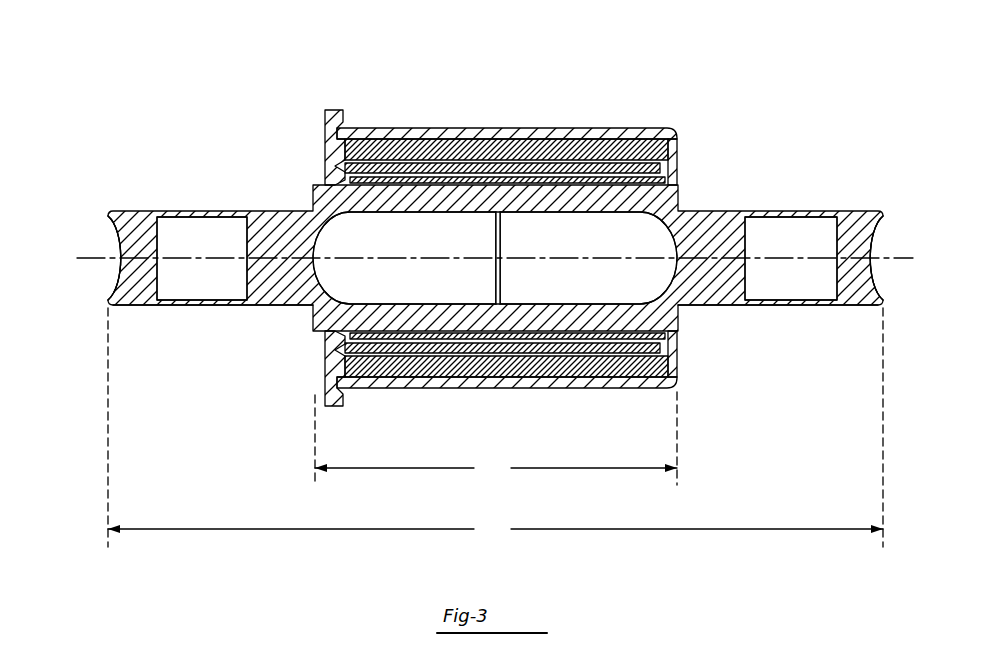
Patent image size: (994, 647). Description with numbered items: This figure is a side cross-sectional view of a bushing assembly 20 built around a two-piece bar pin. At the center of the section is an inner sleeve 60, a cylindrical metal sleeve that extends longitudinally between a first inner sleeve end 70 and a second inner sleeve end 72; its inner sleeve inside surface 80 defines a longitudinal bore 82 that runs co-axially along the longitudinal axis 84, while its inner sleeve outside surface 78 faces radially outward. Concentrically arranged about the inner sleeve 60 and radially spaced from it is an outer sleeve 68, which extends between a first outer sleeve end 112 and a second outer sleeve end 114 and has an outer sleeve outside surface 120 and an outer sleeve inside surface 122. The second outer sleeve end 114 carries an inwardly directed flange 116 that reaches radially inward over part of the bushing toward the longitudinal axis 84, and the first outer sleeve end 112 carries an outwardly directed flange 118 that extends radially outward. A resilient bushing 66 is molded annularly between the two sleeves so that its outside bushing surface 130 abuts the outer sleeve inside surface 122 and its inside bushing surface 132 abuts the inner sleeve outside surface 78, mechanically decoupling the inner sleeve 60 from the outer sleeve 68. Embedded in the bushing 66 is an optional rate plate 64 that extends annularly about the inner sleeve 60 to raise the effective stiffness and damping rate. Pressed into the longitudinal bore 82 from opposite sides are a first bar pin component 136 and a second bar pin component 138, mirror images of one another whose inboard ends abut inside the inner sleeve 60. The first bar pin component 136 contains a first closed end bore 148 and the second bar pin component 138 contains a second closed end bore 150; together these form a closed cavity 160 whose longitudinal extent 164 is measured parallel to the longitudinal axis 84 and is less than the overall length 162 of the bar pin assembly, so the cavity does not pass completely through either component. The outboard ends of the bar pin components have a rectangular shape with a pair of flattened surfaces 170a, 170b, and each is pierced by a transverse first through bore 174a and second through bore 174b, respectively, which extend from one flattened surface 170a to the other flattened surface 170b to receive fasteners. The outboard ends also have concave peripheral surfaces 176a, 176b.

The bushing assembly 20 is at (575, 60).
The inner sleeve 60 is at (568, 381).
The intermediate sleeve/rate plate 64 is at (418, 150).
The bushing 66 is at (587, 127).
The outer sleeve 68 is at (455, 389).
The first inner sleeve end 70 is at (322, 183).
The second inner sleeve end 72 is at (671, 183).
The inner sleeve outside surface 78 is at (540, 172).
The inner sleeve inside surface 80 is at (575, 193).
The longitudinal bore 82 is at (636, 281).
The longitudinal axis 84 is at (897, 258).
The first outer sleeve end 112 is at (322, 405).
The second outer sleeve end 114 is at (681, 381).
The inwardly directed flange 116 is at (675, 127).
The outwardly directed flange 118 is at (330, 108).
The outer sleeve outside surface 120 is at (423, 392).
The outer sleeve inside surface 122 is at (434, 362).
The outside bushing surface 130 is at (528, 389).
The inside bushing surface 132 is at (397, 322).
The first bar pin component 136 is at (135, 225).
The second bar pin component 138 is at (870, 215).
The first closed end bore 148 is at (422, 247).
The second closed end bore 150 is at (576, 288).
The closed cavity 160 is at (512, 243).
The overall length 162 is at (495, 427).
The longitudinal extent 164 is at (496, 438).
The flattened surface 170a is at (272, 203).
The flattened surface 170b is at (128, 310).
The first through bore 174a is at (196, 298).
The second through bore 174b is at (794, 298).
The peripheral surface 176a is at (120, 275).
The peripheral surface 176b is at (872, 280).